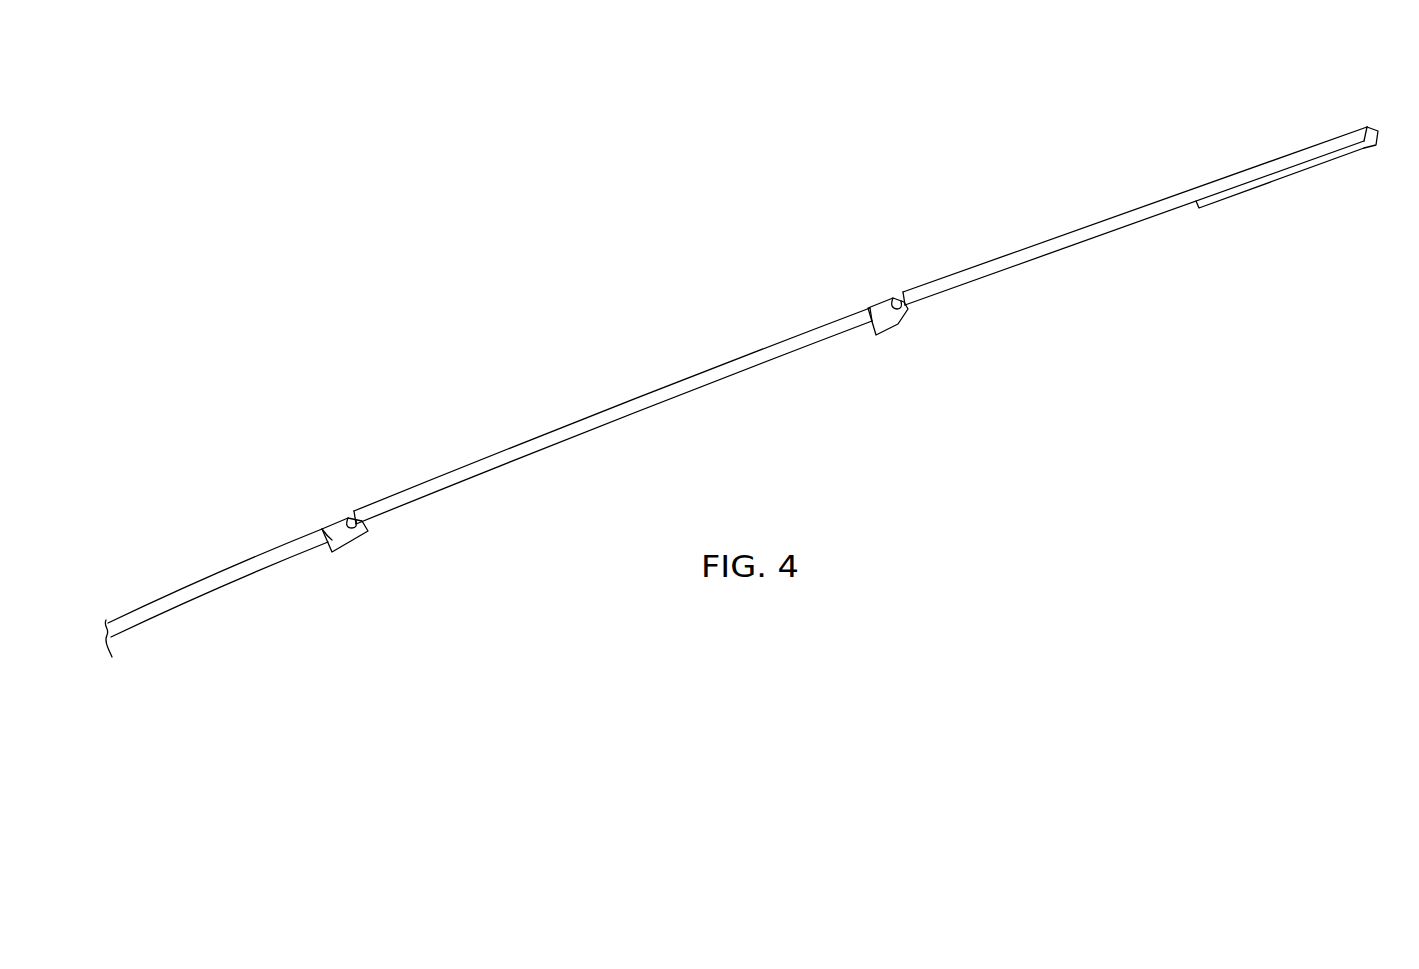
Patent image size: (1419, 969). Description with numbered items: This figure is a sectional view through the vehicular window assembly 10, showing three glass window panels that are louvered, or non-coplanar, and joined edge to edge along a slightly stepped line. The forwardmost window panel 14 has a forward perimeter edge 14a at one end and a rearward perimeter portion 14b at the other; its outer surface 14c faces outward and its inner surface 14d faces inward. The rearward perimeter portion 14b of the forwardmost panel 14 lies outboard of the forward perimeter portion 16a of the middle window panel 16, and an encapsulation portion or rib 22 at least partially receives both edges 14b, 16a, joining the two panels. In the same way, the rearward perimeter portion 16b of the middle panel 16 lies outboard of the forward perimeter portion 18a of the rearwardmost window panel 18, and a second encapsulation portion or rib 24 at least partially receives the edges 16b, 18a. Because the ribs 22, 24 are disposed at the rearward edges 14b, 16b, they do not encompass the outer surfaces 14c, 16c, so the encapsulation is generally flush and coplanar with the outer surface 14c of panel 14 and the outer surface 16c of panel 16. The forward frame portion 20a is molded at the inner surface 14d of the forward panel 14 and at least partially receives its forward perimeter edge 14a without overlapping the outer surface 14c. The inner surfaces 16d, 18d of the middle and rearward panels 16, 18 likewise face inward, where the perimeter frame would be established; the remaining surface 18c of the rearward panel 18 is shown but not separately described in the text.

The window assembly 10 is at (669, 250).
The forwardmost window panel 14 is at (1137, 206).
The forward perimeter edge 14a is at (1354, 133).
The rearward perimeter portion 14b is at (900, 298).
The outer surface 14c is at (1055, 235).
The inner surface 14d is at (1172, 208).
The middle window panel 16 is at (597, 416).
The forward perimeter portion 16a is at (873, 320).
The rearward perimeter portion 16b is at (354, 519).
The outer surface 16c is at (695, 374).
The inner surface 16d is at (552, 446).
The rearwardmost window panel 18 is at (199, 588).
The forward perimeter portion 18a is at (330, 535).
The top surface of third pole section 18c is at (243, 563).
The inner surface 18d is at (218, 594).
The forward frame portion 20a is at (1376, 150).
The encapsulation portion or rib 22 is at (898, 321).
The encapsulation portion or rib 24 is at (350, 533).